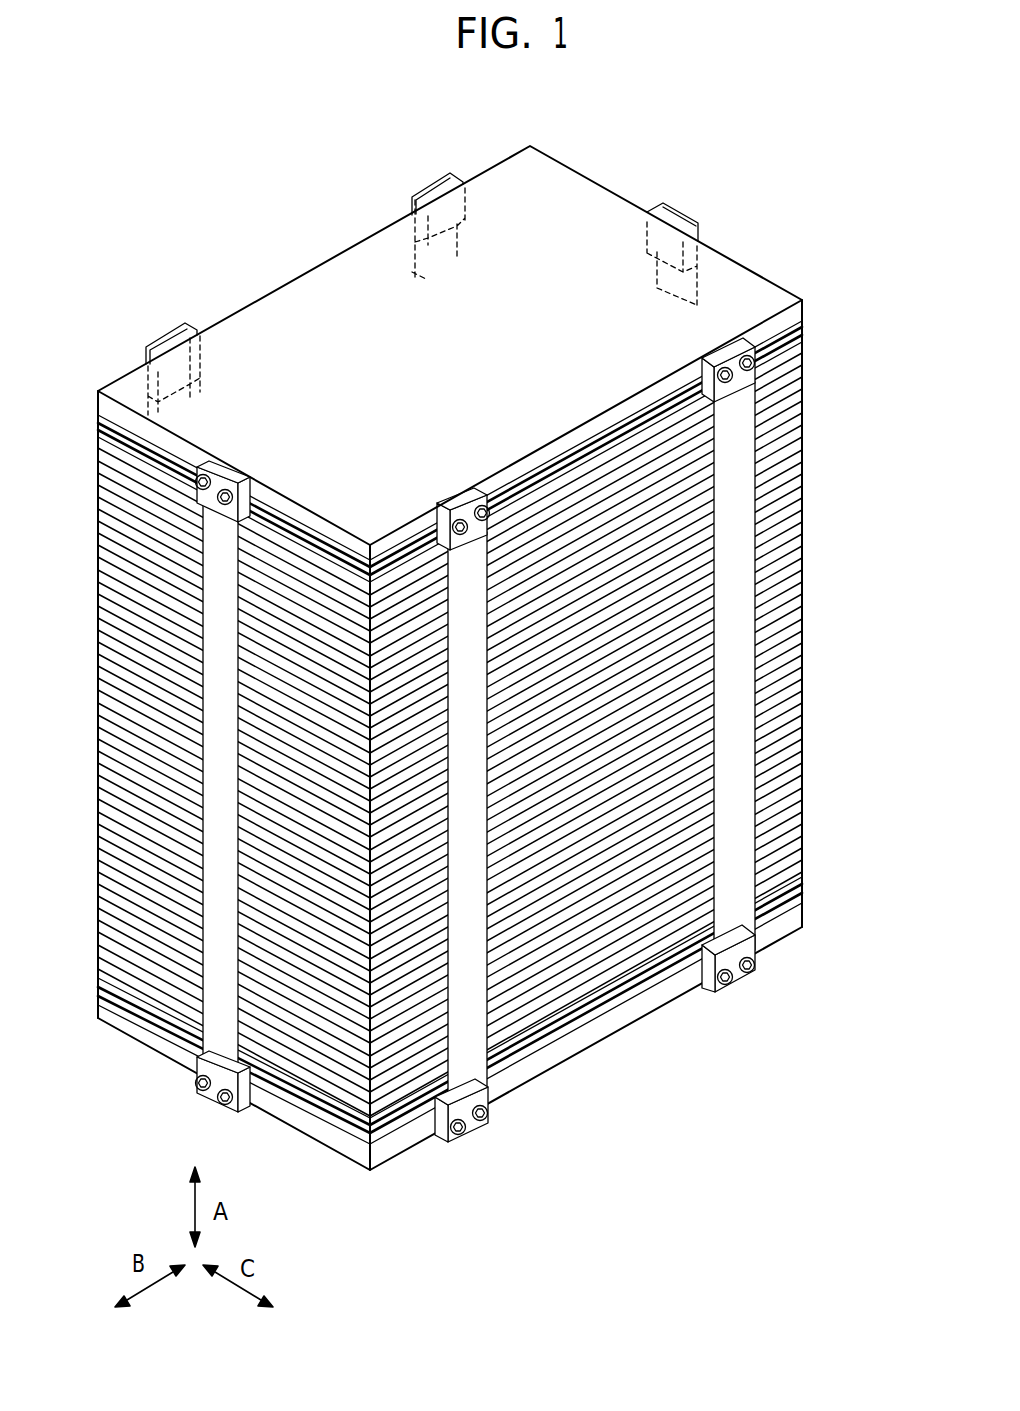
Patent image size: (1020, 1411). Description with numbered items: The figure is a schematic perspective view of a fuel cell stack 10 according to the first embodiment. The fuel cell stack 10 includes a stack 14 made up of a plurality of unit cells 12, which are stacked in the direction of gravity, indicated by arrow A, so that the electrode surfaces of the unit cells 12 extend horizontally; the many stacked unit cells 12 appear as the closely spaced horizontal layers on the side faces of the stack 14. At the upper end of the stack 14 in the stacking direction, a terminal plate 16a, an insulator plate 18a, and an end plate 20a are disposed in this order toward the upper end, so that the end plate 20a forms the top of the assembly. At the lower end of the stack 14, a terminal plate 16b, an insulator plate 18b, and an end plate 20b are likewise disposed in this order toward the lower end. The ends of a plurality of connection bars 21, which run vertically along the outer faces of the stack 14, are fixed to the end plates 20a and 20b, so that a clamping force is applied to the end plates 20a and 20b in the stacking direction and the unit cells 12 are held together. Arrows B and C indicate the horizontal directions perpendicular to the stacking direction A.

The fuel cell stack 10 is at (536, 92).
The unit cell 12 is at (816, 459).
The stack 14 is at (515, 734).
The terminal plate 16a is at (802, 335).
The terminal plate 16b is at (802, 895).
The insulator plate 18a is at (802, 323).
The insulator plate 18b is at (802, 912).
The end plate 20a is at (753, 290).
The end plate 20b is at (638, 1012).
The connection bar 21 is at (720, 443).